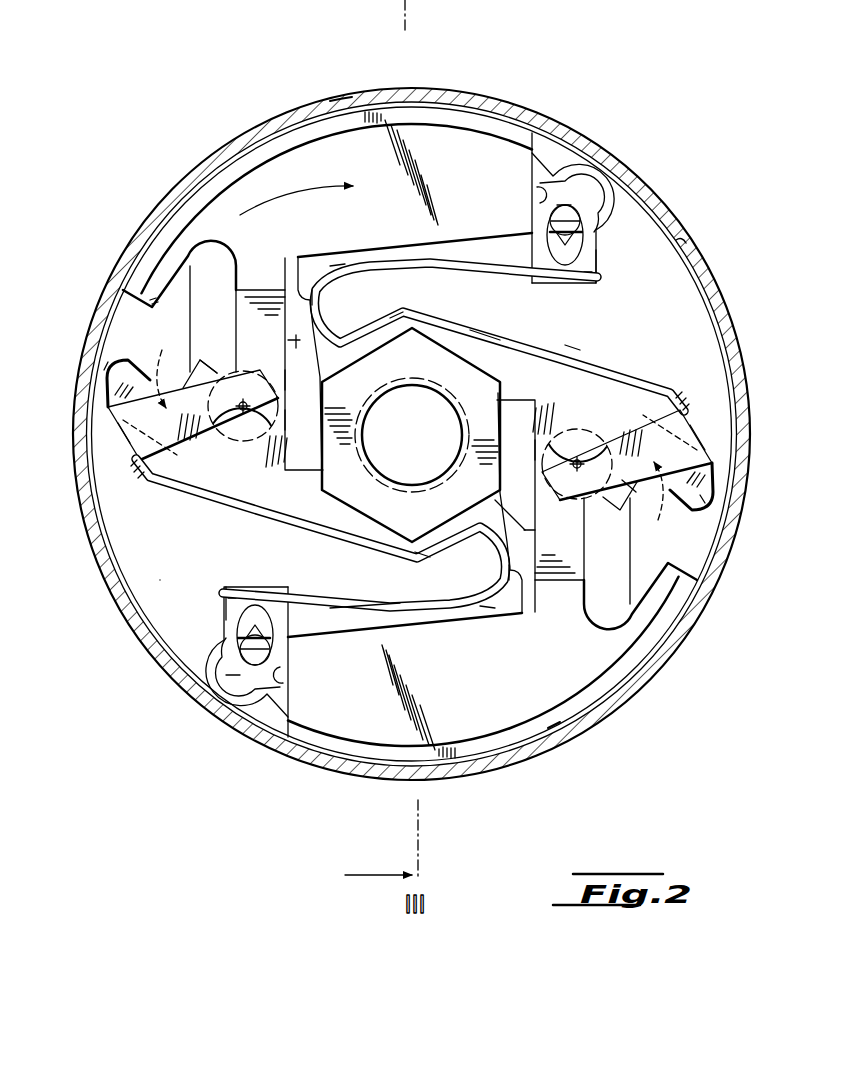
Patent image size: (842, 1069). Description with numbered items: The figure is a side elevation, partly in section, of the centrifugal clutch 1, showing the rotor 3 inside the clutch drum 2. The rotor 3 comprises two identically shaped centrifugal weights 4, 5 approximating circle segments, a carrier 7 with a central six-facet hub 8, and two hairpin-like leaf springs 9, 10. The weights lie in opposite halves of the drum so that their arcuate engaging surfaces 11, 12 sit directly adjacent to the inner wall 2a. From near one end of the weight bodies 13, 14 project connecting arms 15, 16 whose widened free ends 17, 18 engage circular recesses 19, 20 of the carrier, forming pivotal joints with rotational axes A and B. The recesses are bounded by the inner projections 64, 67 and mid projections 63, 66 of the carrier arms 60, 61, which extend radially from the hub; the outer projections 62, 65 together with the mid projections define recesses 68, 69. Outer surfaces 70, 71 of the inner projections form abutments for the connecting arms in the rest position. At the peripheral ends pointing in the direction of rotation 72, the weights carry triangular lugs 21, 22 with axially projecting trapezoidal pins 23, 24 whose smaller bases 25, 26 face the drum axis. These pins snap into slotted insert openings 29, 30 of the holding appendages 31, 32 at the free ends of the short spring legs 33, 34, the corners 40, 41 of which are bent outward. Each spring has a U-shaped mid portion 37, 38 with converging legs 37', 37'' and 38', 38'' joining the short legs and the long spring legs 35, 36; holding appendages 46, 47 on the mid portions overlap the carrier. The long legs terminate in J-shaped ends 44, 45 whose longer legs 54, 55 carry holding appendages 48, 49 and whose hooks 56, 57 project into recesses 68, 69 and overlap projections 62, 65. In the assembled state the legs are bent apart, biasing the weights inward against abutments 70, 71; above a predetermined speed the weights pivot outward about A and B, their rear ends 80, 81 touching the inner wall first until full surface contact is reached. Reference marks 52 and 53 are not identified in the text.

The centrifugal clutch 1 is at (163, 143).
The clutch drum 2 is at (280, 113).
The inner wall 2a is at (683, 245).
The rotor 3 is at (158, 581).
The centrifugal weight 4 is at (340, 97).
The centrifugal weight 5 is at (556, 733).
The carrier 7 is at (278, 512).
The hub 8 is at (353, 492).
The spring 9 is at (567, 345).
The spring 10 is at (378, 618).
The engaging surface 11 is at (478, 112).
The engaging surface 12 is at (325, 748).
The centrifugal weight body 13 is at (432, 135).
The centrifugal weight body 14 is at (510, 710).
The connecting arm 15 is at (243, 318).
The connecting arm 16 is at (586, 560).
The free end 17 is at (237, 430).
The free end 18 is at (582, 420).
The recess 19 is at (286, 420).
The recess 20 is at (548, 440).
The lug 21 is at (565, 208).
The lug 22 is at (262, 705).
The pin 23 is at (572, 217).
The pin 24 is at (240, 665).
The smaller base 25 is at (560, 253).
The smaller base 26 is at (253, 625).
The insert opening 29 is at (559, 205).
The insert opening 30 is at (250, 667).
The holding appendage 31 is at (590, 252).
The holding appendage 32 is at (225, 625).
The short spring leg 33 is at (458, 268).
The short spring leg 34 is at (418, 608).
The long spring leg 35 is at (486, 335).
The long spring leg 36 is at (237, 500).
The U-shaped mid portion 37 is at (349, 297).
The mid portion leg 37' is at (341, 233).
The mid portion leg 37'' is at (406, 340).
The U-shaped mid portion 38 is at (477, 570).
The mid portion leg 38' is at (492, 631).
The mid portion leg 38'' is at (432, 525).
The corner 40 is at (537, 190).
The corner 41 is at (285, 683).
The J-shaped leg end 44 is at (727, 473).
The J-shaped leg end 45 is at (104, 397).
The holding appendage 46 is at (296, 344).
The holding appendage 47 is at (492, 505).
The holding appendage 48 is at (660, 390).
The holding appendage 49 is at (190, 376).
The clip 52 is at (298, 262).
The clip 53 is at (536, 590).
The longer leg 54 is at (730, 443).
The longer leg 55 is at (112, 426).
The hook 56 is at (722, 540).
The hook 57 is at (104, 366).
The carrier arm 60 is at (650, 400).
The carrier arm 61 is at (157, 470).
The outer projection 62 is at (702, 497).
The mid projection 63 is at (626, 500).
The inner projection 64 is at (548, 545).
The outer projection 65 is at (100, 375).
The mid projection 66 is at (208, 370).
The inner projection 67 is at (285, 270).
The recess 68 is at (638, 486).
The recess 69 is at (158, 369).
The abutment surface 70 is at (528, 500).
The abutment surface 71 is at (286, 378).
The direction of rotation 72 is at (300, 212).
The end 80 is at (148, 290).
The end 81 is at (700, 598).
The rotational axis A is at (240, 404).
The rotational axis B is at (581, 464).